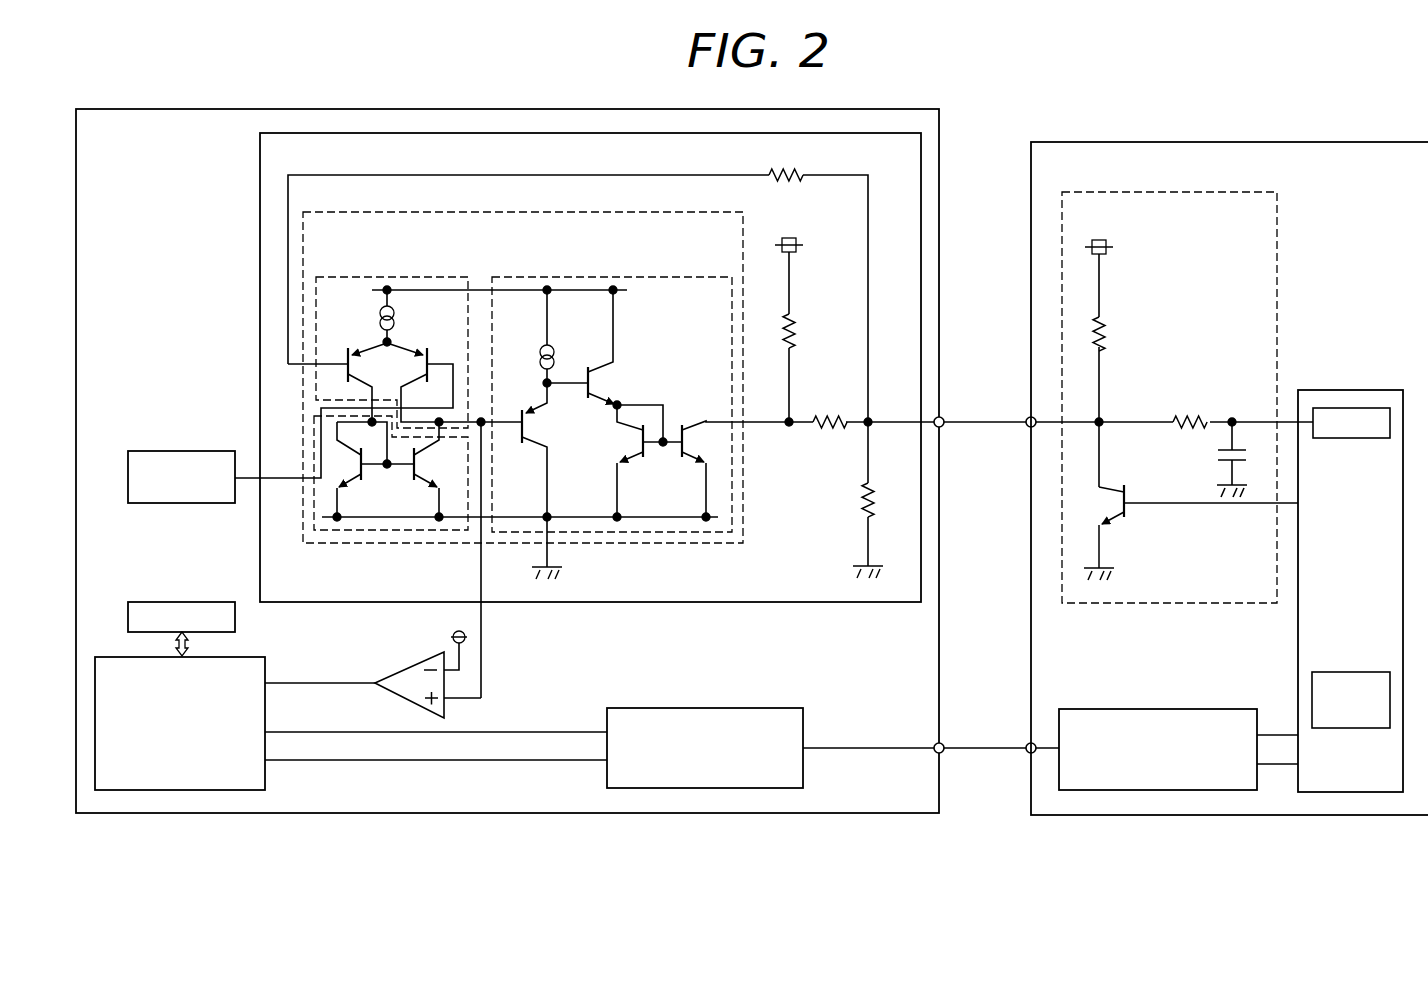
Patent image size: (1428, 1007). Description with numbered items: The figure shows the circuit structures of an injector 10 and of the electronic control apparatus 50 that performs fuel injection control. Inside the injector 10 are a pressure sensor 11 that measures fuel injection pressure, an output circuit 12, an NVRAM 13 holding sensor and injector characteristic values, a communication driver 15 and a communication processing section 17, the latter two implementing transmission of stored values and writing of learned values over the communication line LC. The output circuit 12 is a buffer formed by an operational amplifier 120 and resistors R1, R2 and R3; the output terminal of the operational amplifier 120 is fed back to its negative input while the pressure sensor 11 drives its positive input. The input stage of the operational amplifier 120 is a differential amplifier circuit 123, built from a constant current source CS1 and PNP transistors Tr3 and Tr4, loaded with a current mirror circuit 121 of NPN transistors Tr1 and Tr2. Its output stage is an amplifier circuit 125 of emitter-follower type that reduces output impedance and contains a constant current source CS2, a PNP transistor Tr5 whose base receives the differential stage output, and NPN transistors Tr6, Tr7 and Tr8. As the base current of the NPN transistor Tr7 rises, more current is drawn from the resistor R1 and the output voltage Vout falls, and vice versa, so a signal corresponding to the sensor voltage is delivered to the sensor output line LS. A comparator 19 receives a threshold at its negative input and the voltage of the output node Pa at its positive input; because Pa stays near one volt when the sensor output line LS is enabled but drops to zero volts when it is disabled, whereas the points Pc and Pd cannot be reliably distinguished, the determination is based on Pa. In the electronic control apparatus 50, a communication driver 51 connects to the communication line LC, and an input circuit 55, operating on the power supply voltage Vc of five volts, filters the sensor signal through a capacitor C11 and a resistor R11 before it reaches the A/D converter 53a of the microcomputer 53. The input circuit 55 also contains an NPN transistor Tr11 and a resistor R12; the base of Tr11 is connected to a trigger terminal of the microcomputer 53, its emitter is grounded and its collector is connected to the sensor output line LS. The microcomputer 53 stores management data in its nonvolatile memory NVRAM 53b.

The injector 10 is at (121, 108).
The pressure sensor 11 is at (190, 451).
The output circuit 12 is at (259, 158).
The NVRAM 13 is at (190, 602).
The communication driver 15 is at (748, 708).
The communication processing section 17 is at (217, 657).
The comparator 19 is at (406, 665).
The electronic control apparatus 50 is at (1378, 142).
The communication driver 51 is at (1200, 709).
The microcomputer 53 is at (1360, 391).
The A/D converter 53a is at (1365, 440).
The NVRAM 53b is at (1365, 672).
The input circuit 55 is at (1228, 192).
The operational amplifier 120 is at (672, 213).
The current mirror circuit 121 is at (380, 531).
The differential amplifier circuit 123 is at (410, 277).
The amplifier circuit 125 is at (650, 277).
The NPN transistor Tr1 is at (371, 468).
The NPN transistor Tr2 is at (420, 464).
The PNP transistor Tr3 is at (347, 352).
The PNP transistor Tr4 is at (430, 352).
The PNP transistor Tr5 is at (520, 410).
The NPN transistor Tr6 is at (592, 381).
The NPN transistor Tr7 is at (681, 424).
The NPN transistor Tr8 is at (641, 442).
The NPN transistor Tr11 is at (1128, 514).
The constant current source CS1 is at (396, 318).
The constant current source CS2 is at (540, 352).
The resistor R1 is at (796, 318).
The resistor R2 is at (816, 428).
The resistor R3 is at (860, 516).
The resistor R11 is at (1208, 420).
The resistor R12 is at (1106, 320).
The capacitor C11 is at (1218, 455).
The output node Pa is at (483, 426).
The point Pc is at (551, 380).
The point Pd is at (866, 418).
The power supply voltage Vc is at (799, 273).
The output voltage Vout is at (894, 445).
The sensor output line LS is at (985, 426).
The communication line LC is at (985, 752).